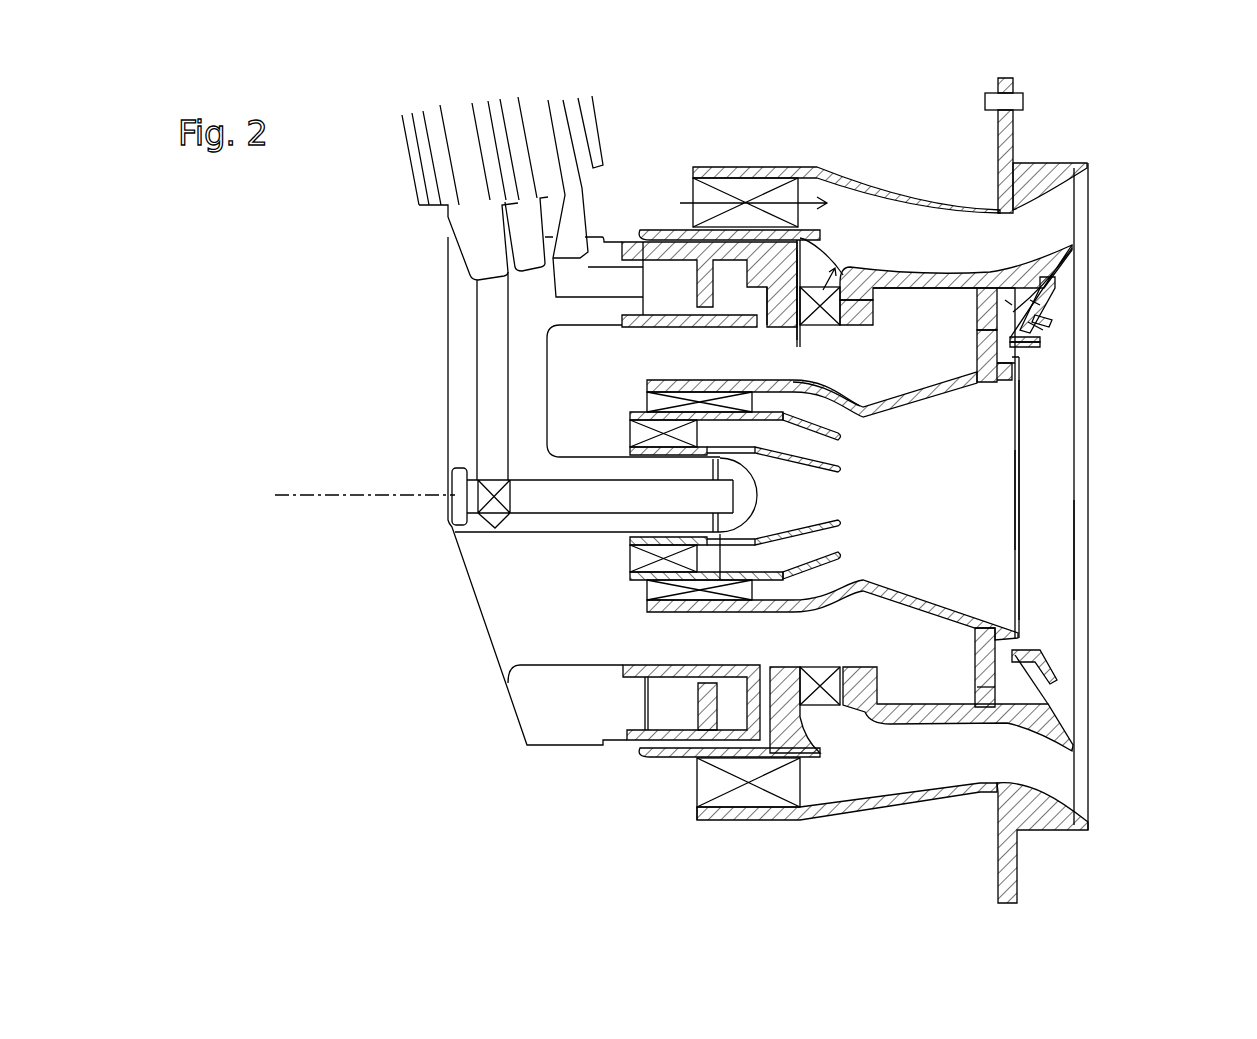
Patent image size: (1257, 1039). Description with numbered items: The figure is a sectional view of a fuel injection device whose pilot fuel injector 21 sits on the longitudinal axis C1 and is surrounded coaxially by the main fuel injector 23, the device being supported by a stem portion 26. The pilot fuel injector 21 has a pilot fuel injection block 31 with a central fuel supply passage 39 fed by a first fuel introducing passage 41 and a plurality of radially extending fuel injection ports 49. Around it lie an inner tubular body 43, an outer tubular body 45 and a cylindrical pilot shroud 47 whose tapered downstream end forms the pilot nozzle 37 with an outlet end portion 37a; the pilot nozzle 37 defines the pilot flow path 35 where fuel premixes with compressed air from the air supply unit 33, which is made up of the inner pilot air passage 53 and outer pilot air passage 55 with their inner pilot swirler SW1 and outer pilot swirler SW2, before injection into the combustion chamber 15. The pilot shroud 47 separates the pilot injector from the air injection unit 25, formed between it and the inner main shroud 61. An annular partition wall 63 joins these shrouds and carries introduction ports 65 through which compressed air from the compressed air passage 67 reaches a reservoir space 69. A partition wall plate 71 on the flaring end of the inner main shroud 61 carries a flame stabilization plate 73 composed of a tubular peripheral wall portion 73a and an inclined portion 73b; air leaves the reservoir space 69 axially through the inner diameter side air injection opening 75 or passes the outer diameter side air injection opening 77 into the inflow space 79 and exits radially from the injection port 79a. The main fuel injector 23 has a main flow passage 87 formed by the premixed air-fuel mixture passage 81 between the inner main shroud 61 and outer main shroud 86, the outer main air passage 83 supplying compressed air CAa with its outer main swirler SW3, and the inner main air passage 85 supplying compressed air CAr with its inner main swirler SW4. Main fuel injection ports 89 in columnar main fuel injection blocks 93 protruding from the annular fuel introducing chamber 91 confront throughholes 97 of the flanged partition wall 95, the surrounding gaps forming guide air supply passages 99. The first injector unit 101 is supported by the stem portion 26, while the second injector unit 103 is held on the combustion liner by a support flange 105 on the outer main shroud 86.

The combustion chamber 15 is at (1230, 543).
The pilot fuel injector 21 is at (1032, 512).
The main fuel injector 23 is at (1104, 190).
The air injection unit 25 is at (1068, 324).
The stem portion 26 is at (412, 173).
The pilot fuel injection block 31 is at (527, 533).
The air supply unit 33 is at (842, 497).
The pilot flow path 35 is at (948, 530).
The pilot nozzle 37 is at (915, 600).
The outlet end portion 37a is at (990, 383).
The fuel supply passage 39 is at (527, 497).
The first fuel introducing passage 41 is at (468, 200).
The inner tubular body 43 is at (628, 543).
The outer tubular body 45 is at (628, 582).
The pilot shroud 47 is at (673, 612).
The fuel injection ports 49 is at (718, 545).
The inner pilot air passage 53 is at (757, 434).
The outer pilot air passage 55 is at (797, 432).
The inner main shroud 61 is at (1033, 718).
The partition wall 63 is at (978, 333).
The introduction ports 65 is at (978, 300).
The compressed air passage 67 is at (903, 369).
The reservoir space 69 is at (1040, 272).
The partition wall plate 71 is at (1047, 290).
The flame stabilization plate 73 is at (1112, 375).
The peripheral wall portion 73a is at (1015, 352).
The inclined portion 73b is at (1042, 340).
The inner diameter side air injection opening 75 is at (1022, 362).
The outer diameter side air injection opening 77 is at (1010, 300).
The inflow space 79 is at (1052, 325).
The injection port 79a is at (1027, 315).
The premixed air-fuel mixture passage 81 is at (968, 256).
The outer main air passage 83 is at (805, 193).
The inner main air passage 85 is at (838, 292).
The outer main shroud 86 is at (1050, 165).
The main flow passage 87 is at (882, 231).
The main fuel injection ports 89 is at (812, 328).
The annular fuel introducing chamber 91 is at (708, 300).
The main fuel injection block 93 is at (800, 302).
The flanged partition wall 95 is at (757, 322).
The throughhole 97 is at (805, 248).
The guide air supply passage 99 is at (783, 325).
The first injector unit 101 is at (561, 760).
The second injector unit 103 is at (789, 833).
The support flange 105 is at (997, 863).
The inner pilot swirler SW1 is at (633, 437).
The outer pilot swirler SW2 is at (650, 400).
The outer main swirler SW3 is at (695, 192).
The inner main swirler SW4 is at (832, 398).
The compressed air CAa is at (717, 203).
The compressed air CAr is at (835, 322).
The longitudinal axis C1 is at (352, 502).